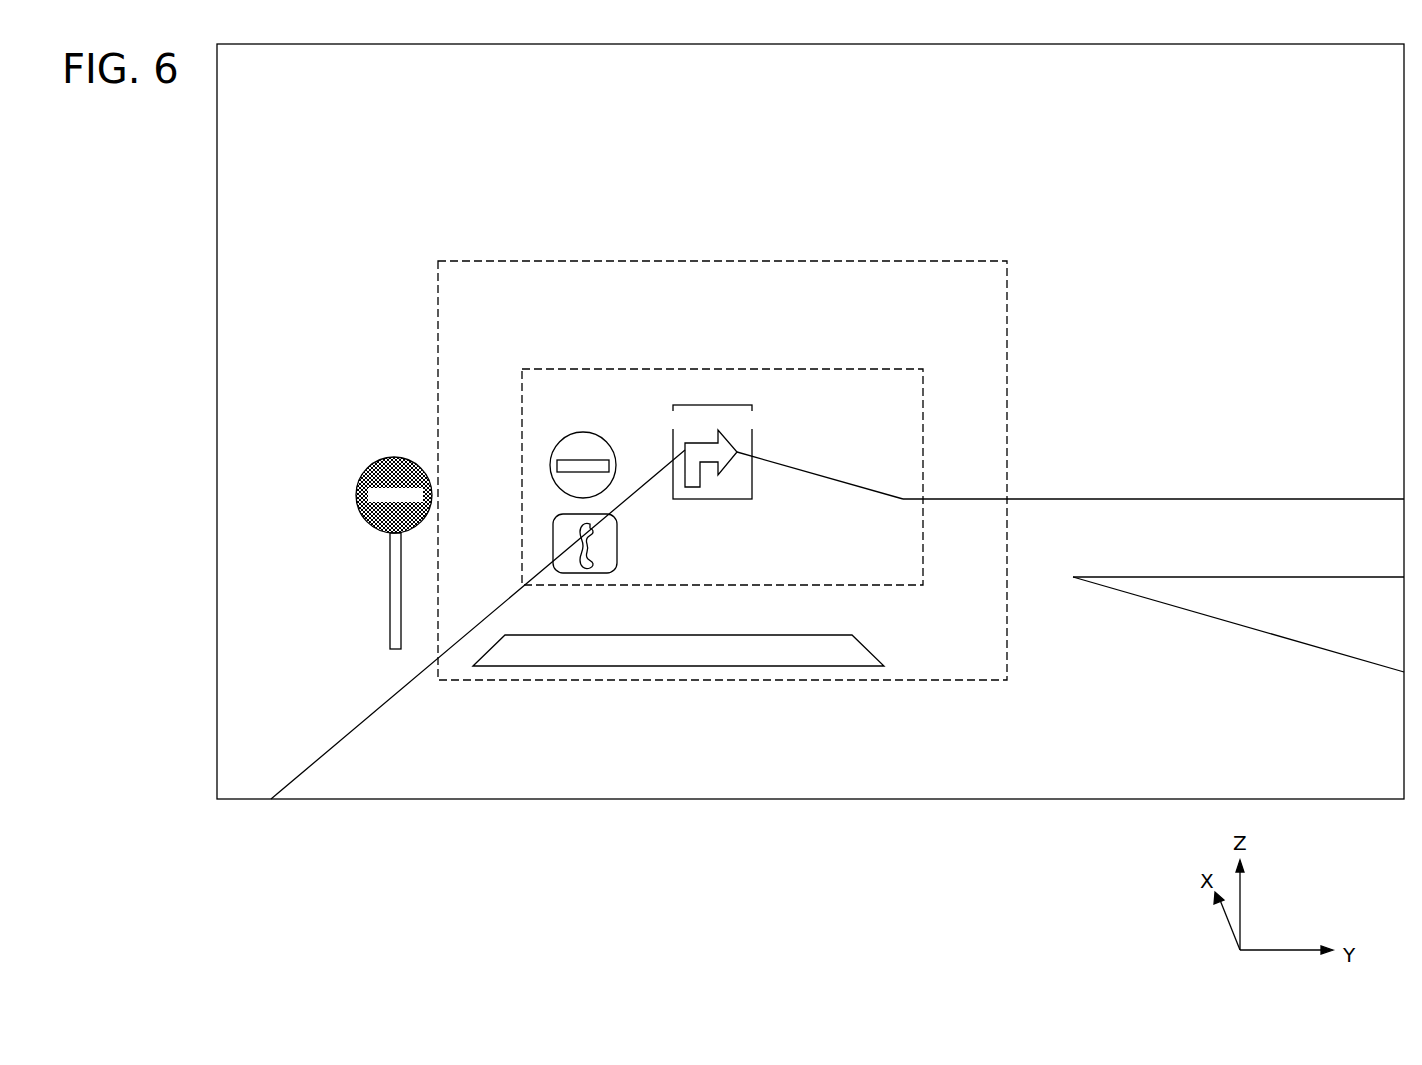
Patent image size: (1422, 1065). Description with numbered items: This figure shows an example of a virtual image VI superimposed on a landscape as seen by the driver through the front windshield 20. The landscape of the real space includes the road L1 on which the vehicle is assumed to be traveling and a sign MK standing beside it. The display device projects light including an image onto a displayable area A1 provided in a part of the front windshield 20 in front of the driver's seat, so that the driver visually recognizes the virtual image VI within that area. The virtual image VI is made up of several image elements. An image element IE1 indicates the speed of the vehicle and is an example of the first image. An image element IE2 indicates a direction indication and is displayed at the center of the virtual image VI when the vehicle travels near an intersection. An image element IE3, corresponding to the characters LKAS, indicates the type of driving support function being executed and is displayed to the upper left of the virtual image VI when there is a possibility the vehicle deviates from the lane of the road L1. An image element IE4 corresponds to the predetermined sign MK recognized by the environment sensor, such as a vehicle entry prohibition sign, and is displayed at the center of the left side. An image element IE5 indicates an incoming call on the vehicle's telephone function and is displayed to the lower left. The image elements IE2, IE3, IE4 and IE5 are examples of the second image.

The front windshield 20 is at (374, 134).
The displayable area A1 is at (945, 261).
The virtual image VI is at (882, 368).
The image element indicating vehicle speed IE1 is at (877, 466).
The image element indicating direction indication IE2 is at (708, 403).
The image element indicating driving support function type IE3 is at (585, 377).
The image element indicating a sign IE4 is at (550, 464).
The image element indicating incoming call IE5 is at (553, 542).
The sign MK is at (394, 458).
The road L1 is at (843, 776).